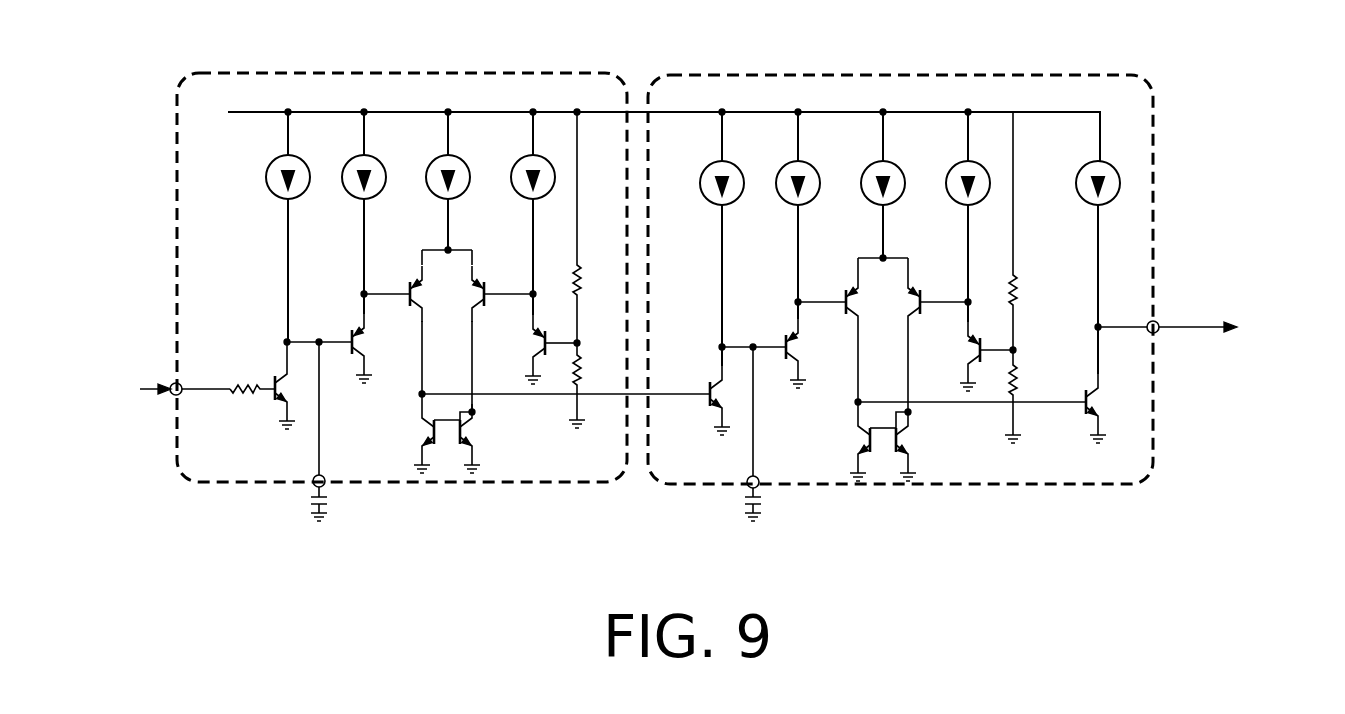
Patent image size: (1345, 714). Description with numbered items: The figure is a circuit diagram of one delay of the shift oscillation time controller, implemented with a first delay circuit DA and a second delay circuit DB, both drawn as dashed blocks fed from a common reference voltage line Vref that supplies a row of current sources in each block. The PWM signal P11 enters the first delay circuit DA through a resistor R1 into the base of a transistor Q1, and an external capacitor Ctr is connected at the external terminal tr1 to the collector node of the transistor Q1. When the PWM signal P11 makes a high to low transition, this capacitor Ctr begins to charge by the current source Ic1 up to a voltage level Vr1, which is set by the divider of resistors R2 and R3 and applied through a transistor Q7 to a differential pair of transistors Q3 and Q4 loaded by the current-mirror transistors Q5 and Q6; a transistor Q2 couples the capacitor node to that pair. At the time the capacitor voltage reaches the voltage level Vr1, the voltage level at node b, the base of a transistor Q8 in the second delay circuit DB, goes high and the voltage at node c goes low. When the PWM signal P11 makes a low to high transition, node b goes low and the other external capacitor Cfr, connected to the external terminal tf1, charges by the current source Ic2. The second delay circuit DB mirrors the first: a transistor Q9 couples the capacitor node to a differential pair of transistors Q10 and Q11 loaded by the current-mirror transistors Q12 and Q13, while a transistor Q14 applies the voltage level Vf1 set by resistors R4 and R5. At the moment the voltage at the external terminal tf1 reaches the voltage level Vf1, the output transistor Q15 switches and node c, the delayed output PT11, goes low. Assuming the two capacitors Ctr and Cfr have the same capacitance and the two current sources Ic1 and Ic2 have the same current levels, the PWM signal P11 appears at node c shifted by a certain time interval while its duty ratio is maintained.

The first delay circuit DA is at (331, 72).
The second delay circuit DB is at (949, 74).
The reference voltage line Vref is at (646, 132).
The current source Ic1 is at (294, 227).
The current source Ic2 is at (731, 228).
The PWM signal P11 is at (136, 404).
The delayed PWM output PT11 is at (1203, 339).
The resistor R1 is at (252, 403).
The resistor R2 is at (593, 227).
The resistor R3 is at (591, 385).
The resistor R4 is at (1030, 231).
The resistor R5 is at (1028, 396).
The voltage level Vr1 is at (593, 343).
The voltage level Vf1 is at (1027, 350).
The transistor Q1 is at (294, 384).
The transistor Q2 is at (334, 337).
The transistor Q3 is at (418, 320).
The transistor Q4 is at (504, 331).
The transistor Q5 is at (426, 432).
The transistor Q6 is at (481, 438).
The transistor Q7 is at (541, 349).
The transistor Q8 is at (713, 389).
The transistor Q9 is at (769, 343).
The transistor Q10 is at (853, 333).
The transistor Q11 is at (939, 335).
The transistor Q12 is at (853, 446).
The transistor Q13 is at (923, 445).
The transistor Q14 is at (970, 356).
The transistor Q15 is at (997, 383).
The external capacitor Ctr is at (306, 431).
The external terminal tr1 is at (345, 499).
The external capacitor Cfr is at (739, 434).
The external terminal tf1 is at (774, 499).